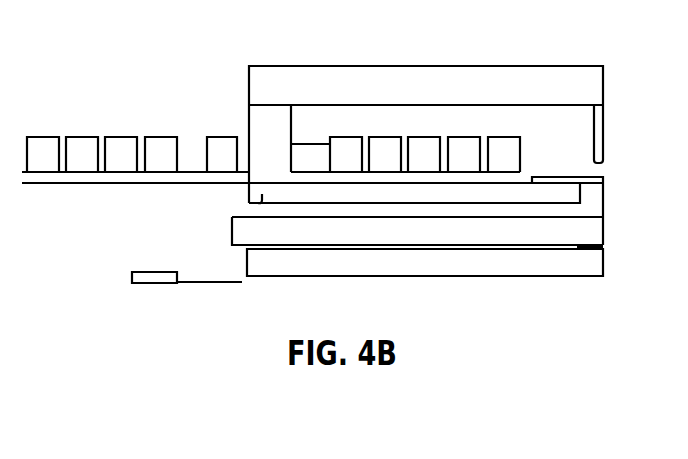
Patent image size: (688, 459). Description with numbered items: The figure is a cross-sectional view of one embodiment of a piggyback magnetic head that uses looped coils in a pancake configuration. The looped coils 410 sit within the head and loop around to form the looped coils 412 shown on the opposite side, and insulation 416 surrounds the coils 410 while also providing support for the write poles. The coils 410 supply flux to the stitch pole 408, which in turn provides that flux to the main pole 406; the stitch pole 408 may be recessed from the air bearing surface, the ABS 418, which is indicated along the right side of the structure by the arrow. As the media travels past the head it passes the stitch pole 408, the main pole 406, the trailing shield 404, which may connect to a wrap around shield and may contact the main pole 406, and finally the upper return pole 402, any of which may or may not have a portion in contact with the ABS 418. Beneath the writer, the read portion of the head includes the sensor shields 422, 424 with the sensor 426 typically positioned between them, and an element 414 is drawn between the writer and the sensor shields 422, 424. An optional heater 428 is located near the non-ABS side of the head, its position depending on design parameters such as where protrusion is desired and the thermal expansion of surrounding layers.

The upper return pole 402 is at (505, 66).
The trailing shield 404 is at (604, 145).
The main pole 406 is at (604, 178).
The stitch pole 408 is at (254, 205).
The looped coils 410 is at (390, 137).
The looped coils 412 is at (35, 137).
The support frame 414 is at (601, 207).
The insulation 416 is at (570, 146).
The ABS 418 is at (605, 89).
The sensor shield 422 is at (233, 233).
The sensor shield 424 is at (247, 256).
The sensor 426 is at (600, 243).
The heater 428 is at (155, 271).